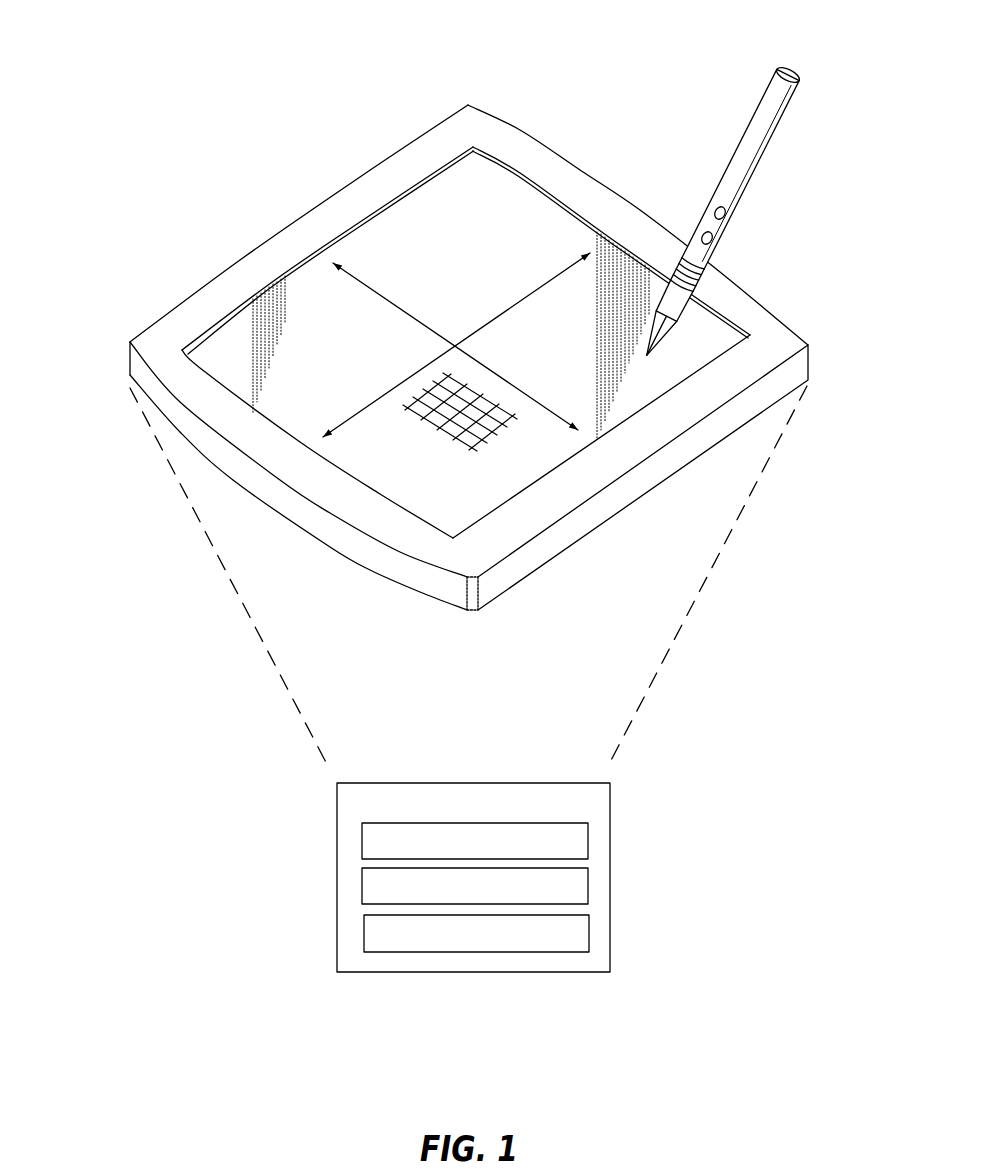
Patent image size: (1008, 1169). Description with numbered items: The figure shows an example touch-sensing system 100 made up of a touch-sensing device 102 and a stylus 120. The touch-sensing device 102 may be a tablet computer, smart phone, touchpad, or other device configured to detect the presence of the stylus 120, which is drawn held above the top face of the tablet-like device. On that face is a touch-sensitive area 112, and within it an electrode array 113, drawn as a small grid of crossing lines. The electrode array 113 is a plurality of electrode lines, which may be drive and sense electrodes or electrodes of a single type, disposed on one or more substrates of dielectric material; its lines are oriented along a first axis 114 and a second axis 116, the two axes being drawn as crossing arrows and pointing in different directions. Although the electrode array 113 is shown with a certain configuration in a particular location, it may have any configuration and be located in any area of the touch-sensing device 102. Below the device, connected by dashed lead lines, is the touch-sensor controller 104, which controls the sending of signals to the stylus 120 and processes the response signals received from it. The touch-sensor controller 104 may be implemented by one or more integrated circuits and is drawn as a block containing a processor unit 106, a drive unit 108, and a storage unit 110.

The touch-sensing system 100 is at (143, 26).
The touch-sensing device 102 is at (118, 364).
The touch-sensor controller 104 is at (423, 877).
The processor unit 106 is at (475, 841).
The drive unit 108 is at (475, 886).
The storage unit 110 is at (476, 933).
The touch-sensitive area 112 is at (426, 505).
The electrode array 113 is at (437, 374).
The first axis 114 is at (568, 411).
The second axis 116 is at (584, 236).
The stylus 120 is at (786, 135).